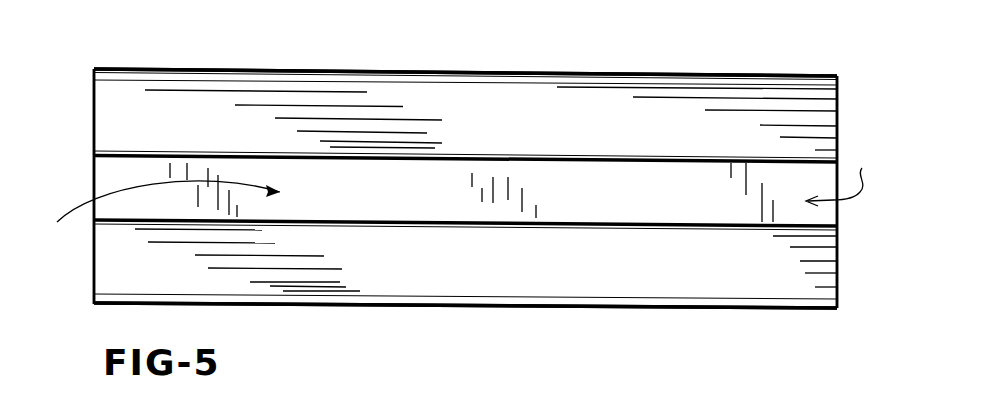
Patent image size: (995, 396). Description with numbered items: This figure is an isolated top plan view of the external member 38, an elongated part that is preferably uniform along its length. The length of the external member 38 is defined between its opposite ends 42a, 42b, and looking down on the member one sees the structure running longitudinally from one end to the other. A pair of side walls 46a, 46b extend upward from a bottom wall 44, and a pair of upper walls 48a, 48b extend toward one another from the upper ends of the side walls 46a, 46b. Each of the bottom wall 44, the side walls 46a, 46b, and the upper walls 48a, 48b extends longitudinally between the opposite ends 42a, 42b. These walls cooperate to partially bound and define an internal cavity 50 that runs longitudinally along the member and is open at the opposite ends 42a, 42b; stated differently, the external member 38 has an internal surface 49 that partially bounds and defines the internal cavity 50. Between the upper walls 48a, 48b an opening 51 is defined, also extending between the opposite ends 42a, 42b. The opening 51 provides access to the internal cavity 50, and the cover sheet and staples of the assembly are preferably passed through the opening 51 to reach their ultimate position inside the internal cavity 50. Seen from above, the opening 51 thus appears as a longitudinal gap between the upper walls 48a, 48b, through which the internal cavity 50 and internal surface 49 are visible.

The external member 38 is at (763, 59).
The first opposite end 42a is at (94, 93).
The second opposite end 42b is at (837, 123).
The bottom wall 44 is at (645, 206).
The first side wall 46a is at (211, 68).
The second side wall 46b is at (583, 310).
The first upper wall 48a is at (528, 131).
The second upper wall 48b is at (537, 278).
The internal surface 49 is at (366, 202).
The internal cavity 50 is at (158, 215).
The opening 51 is at (844, 176).